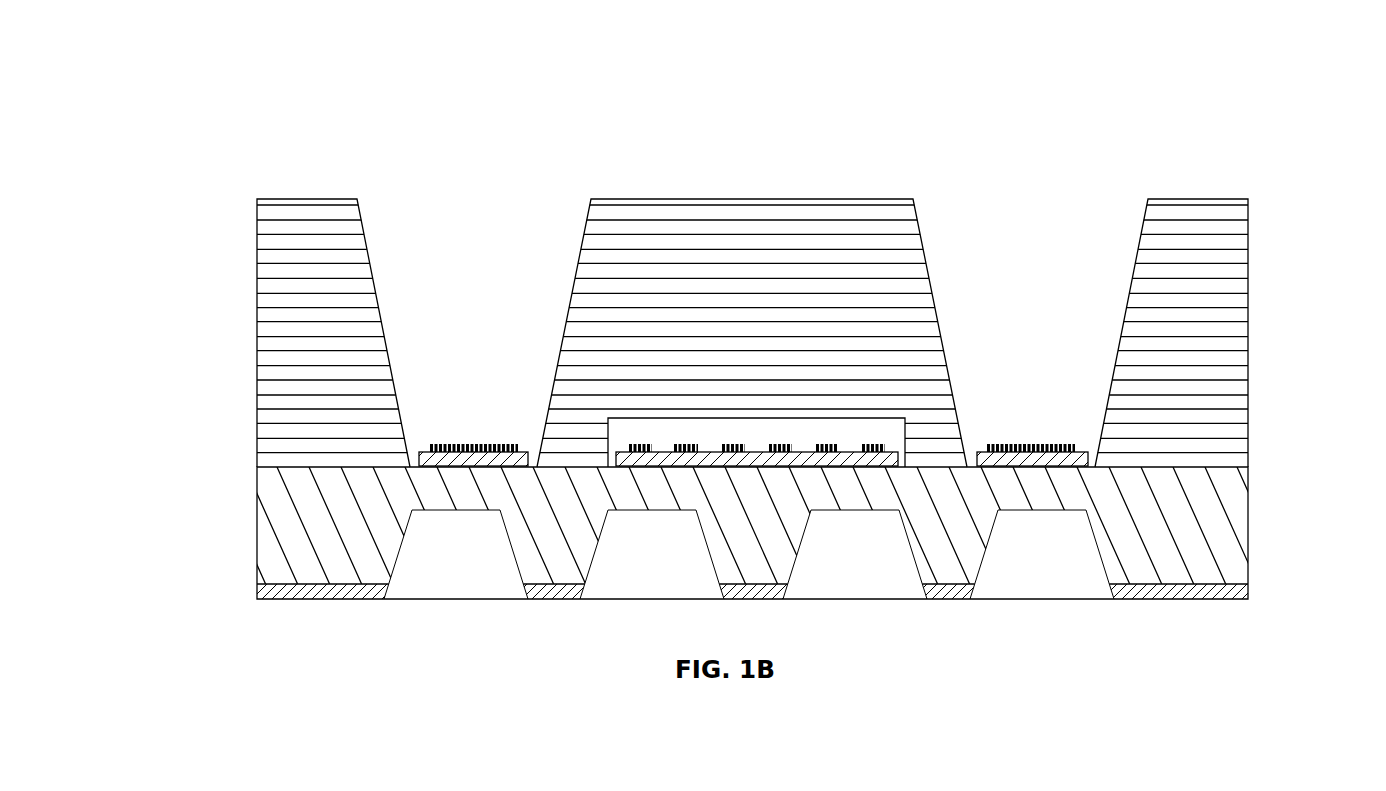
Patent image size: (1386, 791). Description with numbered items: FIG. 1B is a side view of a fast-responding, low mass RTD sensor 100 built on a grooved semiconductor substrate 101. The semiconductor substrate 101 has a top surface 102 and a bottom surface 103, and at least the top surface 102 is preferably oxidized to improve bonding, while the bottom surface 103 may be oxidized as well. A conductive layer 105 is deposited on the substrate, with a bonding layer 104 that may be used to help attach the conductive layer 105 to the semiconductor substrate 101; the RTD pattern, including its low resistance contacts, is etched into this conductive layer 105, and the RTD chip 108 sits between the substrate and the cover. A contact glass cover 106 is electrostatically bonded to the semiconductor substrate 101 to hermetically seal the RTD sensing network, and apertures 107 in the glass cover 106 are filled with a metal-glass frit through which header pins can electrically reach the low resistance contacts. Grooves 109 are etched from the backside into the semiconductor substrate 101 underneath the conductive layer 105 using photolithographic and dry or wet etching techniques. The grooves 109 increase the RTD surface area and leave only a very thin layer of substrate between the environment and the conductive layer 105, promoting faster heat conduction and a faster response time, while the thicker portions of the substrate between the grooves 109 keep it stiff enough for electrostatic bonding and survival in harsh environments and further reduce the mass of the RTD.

The light emitting device package 100 is at (866, 180).
The semiconductor substrate 101 is at (1248, 526).
The top surface 102 is at (415, 458).
The bottom surface 103 is at (257, 600).
The bonding layer 104 is at (1090, 453).
The conductive layer 105 is at (433, 445).
The glass cover 106 is at (257, 315).
The apertures 107 is at (478, 302).
The light emitting chip 108 is at (673, 432).
The grooves 109 is at (1050, 573).